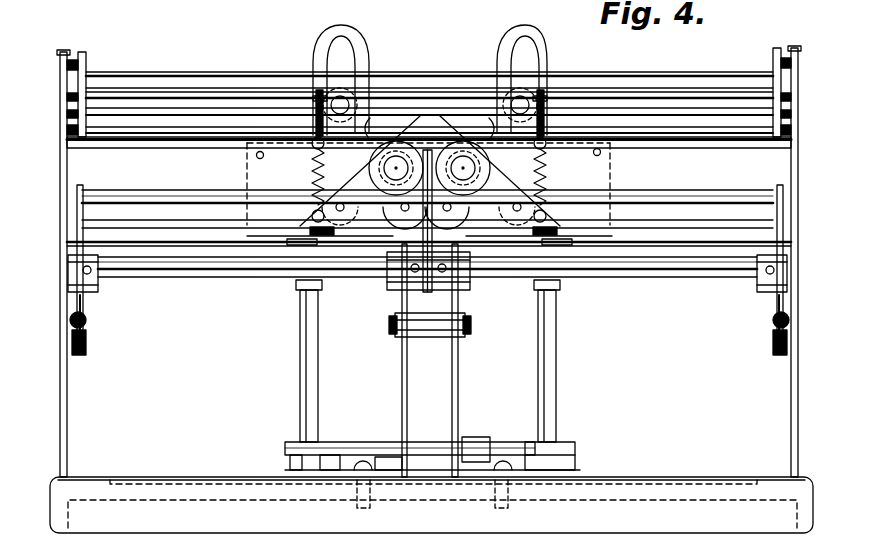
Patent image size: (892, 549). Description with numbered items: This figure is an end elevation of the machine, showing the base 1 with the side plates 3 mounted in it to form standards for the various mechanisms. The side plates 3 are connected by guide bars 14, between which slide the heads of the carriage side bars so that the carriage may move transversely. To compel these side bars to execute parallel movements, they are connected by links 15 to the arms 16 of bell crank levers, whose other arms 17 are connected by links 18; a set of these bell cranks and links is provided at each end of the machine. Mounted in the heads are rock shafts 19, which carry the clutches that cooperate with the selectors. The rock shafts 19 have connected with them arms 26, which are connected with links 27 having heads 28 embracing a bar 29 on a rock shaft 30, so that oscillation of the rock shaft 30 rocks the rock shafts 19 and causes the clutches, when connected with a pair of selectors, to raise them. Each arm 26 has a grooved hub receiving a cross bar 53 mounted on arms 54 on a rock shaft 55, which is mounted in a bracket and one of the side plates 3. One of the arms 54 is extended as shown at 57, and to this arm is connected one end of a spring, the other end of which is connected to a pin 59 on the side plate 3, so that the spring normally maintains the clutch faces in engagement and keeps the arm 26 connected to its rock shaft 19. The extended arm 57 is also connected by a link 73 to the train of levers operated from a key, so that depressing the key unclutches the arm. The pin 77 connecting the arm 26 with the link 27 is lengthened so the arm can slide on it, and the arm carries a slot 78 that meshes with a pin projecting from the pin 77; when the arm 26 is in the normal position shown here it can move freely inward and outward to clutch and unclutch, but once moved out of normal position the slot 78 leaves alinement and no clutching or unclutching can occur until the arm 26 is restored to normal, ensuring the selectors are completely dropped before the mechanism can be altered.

The base 1 is at (634, 478).
The side plates 3 is at (60, 172).
The guide bars 14 is at (165, 148).
The links 15 is at (306, 246).
The arms of bell crank levers 16 is at (348, 256).
The other arms of bell crank levers 17 is at (343, 444).
The links 18 is at (494, 472).
The rock shafts 19 is at (460, 166).
The arms 26 is at (312, 180).
The links 27 is at (312, 160).
The heads 28 is at (312, 86).
The bar 29 is at (202, 116).
The rock shaft 30 is at (706, 78).
The cross bar 53 is at (670, 194).
The arms 54 is at (100, 178).
The rock shaft 55 is at (648, 266).
The extended arm 57 is at (84, 305).
The pin 59 is at (72, 316).
The link 73 is at (70, 340).
The pin 77 is at (302, 278).
The slot 78 is at (364, 256).